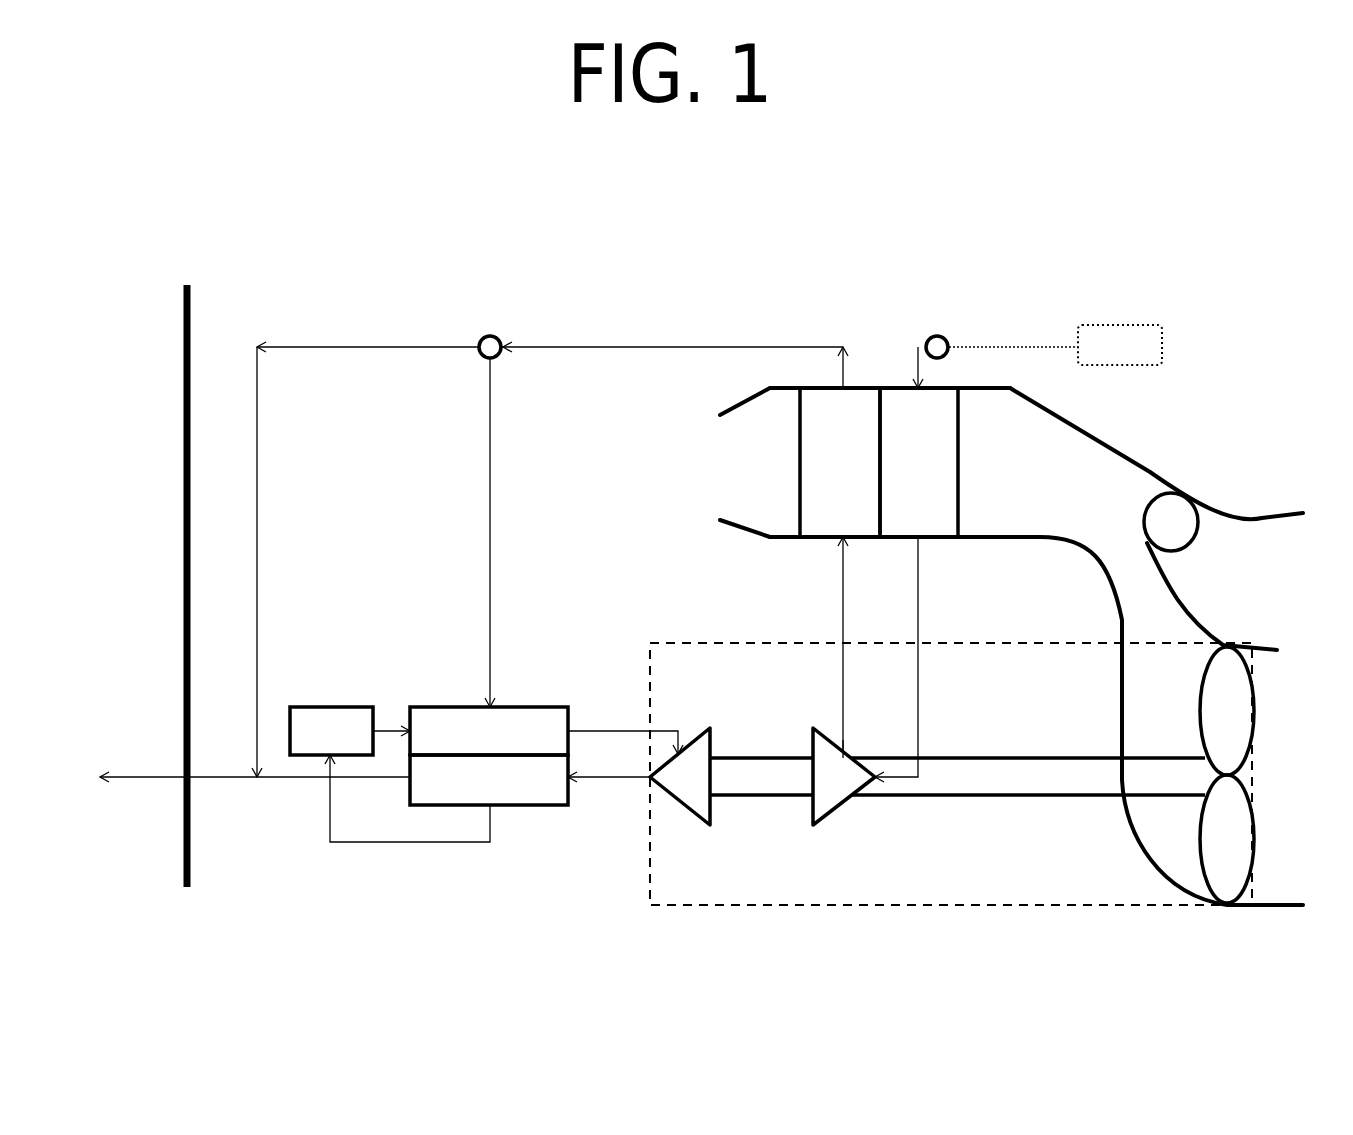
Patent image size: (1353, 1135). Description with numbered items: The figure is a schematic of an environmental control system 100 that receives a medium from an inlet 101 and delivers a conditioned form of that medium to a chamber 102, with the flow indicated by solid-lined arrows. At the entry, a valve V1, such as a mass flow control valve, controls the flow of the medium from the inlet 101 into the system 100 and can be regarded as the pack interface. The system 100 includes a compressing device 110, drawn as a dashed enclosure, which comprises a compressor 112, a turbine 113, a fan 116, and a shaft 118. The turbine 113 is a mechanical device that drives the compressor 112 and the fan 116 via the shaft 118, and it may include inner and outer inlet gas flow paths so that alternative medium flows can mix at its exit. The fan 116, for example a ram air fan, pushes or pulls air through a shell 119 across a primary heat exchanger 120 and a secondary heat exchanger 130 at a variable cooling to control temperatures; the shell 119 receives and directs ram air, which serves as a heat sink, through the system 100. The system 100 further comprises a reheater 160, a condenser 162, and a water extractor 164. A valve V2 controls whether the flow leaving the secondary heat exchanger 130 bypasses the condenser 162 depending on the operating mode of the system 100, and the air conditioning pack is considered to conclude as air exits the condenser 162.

The system 100 is at (1163, 150).
The inlet 101 is at (1055, 345).
The chamber 102 is at (184, 288).
The compressing device 110 is at (748, 907).
The compressor 112 is at (819, 789).
The turbine 113 is at (671, 789).
The fan 116 is at (1172, 837).
The shaft 118 is at (1060, 798).
The shell 119 is at (1172, 480).
The primary heat exchanger 120 is at (899, 477).
The secondary heat exchanger 130 is at (820, 477).
The reheater 160 is at (470, 744).
The condenser 162 is at (470, 794).
The water extractor 164 is at (312, 744).
The valve V1 is at (927, 338).
The valve V2 is at (480, 342).